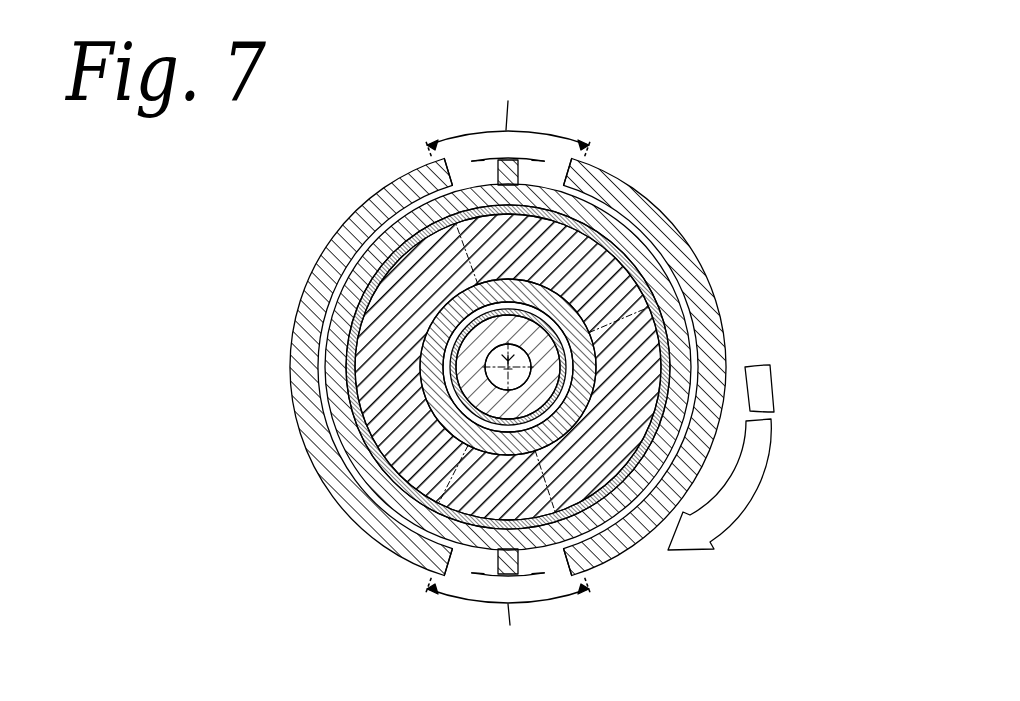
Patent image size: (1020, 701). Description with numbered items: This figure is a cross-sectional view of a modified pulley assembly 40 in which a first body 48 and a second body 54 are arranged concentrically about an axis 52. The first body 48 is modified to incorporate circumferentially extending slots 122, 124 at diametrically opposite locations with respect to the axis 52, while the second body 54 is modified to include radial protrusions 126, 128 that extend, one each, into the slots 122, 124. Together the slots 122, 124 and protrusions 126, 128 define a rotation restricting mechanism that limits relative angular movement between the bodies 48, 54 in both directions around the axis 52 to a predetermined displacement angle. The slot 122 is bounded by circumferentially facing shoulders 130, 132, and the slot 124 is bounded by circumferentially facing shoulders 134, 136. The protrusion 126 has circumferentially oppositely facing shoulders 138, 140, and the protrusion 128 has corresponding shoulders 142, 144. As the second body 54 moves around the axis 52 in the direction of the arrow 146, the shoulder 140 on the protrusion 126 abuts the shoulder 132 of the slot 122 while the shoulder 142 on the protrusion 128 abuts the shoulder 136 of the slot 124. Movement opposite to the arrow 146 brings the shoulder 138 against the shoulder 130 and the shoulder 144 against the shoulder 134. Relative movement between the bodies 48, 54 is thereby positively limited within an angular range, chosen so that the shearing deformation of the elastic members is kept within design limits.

The pulley assembly 40 is at (756, 150).
The first body 48 is at (717, 337).
The axis 52 is at (673, 297).
The second body 54 is at (614, 240).
The slot 122 is at (446, 168).
The slot 124 is at (446, 565).
The radial protrusion 126 is at (497, 170).
The radial protrusion 128 is at (508, 572).
The shoulder 130 is at (456, 176).
The shoulder 132 is at (568, 170).
The shoulder 134 is at (572, 567).
The shoulder 136 is at (461, 572).
The shoulder 138 is at (472, 184).
The shoulder 140 is at (545, 180).
The shoulder 142 is at (480, 563).
The shoulder 144 is at (540, 566).
The arrow 146 is at (762, 471).